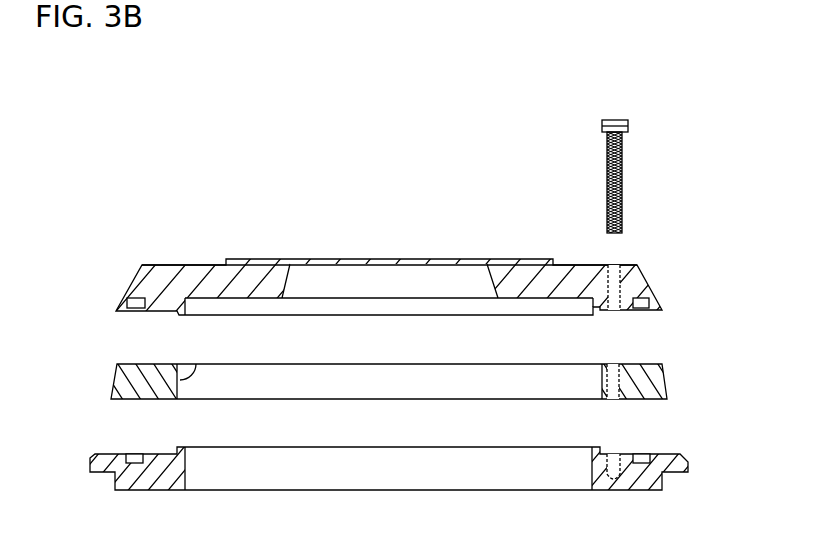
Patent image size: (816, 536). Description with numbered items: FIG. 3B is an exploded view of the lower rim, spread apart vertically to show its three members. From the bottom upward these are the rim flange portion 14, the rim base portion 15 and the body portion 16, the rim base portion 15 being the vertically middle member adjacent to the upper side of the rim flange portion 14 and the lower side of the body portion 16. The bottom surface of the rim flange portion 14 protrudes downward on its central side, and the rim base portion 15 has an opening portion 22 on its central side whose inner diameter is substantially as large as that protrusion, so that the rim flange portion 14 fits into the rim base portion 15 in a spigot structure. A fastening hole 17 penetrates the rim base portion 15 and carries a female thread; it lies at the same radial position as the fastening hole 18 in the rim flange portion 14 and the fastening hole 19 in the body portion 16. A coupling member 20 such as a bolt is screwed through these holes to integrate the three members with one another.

The rim flange portion 14 is at (680, 467).
The rim base portion 15 is at (651, 383).
The body portion 16 is at (636, 292).
The fastening hole 17 is at (613, 377).
The fastening hole 18 is at (614, 467).
The fastening hole 19 is at (615, 278).
The coupling member 20 is at (613, 118).
The opening portion 22 is at (196, 363).